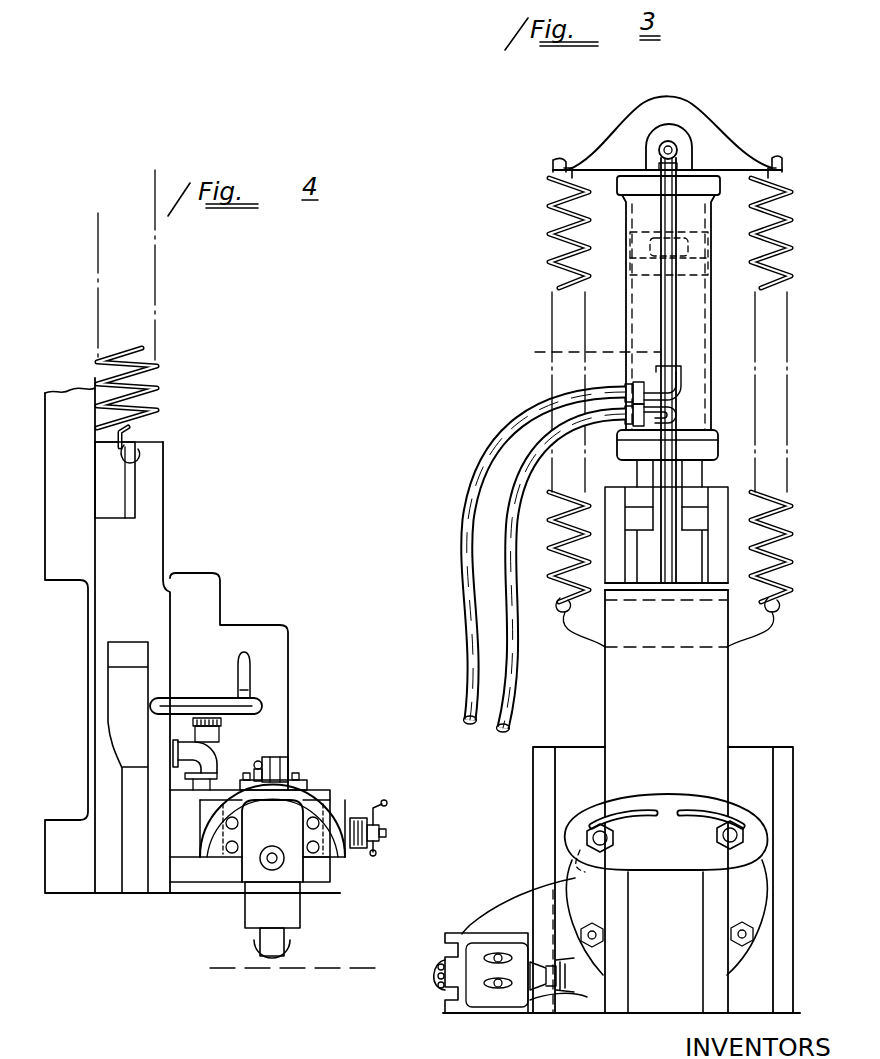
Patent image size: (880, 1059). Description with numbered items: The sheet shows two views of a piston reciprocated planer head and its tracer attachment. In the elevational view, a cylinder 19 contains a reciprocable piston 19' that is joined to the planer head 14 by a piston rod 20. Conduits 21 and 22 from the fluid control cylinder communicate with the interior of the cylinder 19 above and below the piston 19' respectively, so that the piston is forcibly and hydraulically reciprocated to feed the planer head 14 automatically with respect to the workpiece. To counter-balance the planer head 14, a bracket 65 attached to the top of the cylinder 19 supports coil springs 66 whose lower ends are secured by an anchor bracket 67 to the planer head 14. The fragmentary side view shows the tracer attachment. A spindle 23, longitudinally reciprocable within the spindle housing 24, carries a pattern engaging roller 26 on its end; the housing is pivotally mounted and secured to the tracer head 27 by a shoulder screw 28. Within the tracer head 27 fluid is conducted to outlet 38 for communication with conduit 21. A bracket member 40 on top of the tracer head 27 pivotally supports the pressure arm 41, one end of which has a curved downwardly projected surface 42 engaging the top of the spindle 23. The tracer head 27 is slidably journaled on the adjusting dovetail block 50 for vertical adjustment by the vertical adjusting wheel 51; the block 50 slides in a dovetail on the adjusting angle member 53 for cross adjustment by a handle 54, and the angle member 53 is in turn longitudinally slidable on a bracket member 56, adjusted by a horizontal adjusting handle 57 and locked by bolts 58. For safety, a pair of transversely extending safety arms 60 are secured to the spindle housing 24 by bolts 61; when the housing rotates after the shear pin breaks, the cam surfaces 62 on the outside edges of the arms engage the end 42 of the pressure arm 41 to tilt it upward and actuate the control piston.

In FIG. 3, the planer head 14 is at (716, 702).
In FIG. 4, the planer head 14 is at (205, 607).
In FIG. 3, the cylinder 19 is at (607, 303).
In FIG. 3, the piston 19' is at (693, 251).
In FIG. 3, the piston rod 20 is at (577, 349).
In FIG. 3, the conduit 21 is at (676, 150).
In FIG. 3, the conduit 22 is at (510, 522).
In FIG. 4, the spindle 23 is at (286, 944).
In FIG. 4, the spindle housing 24 is at (250, 927).
In FIG. 4, the pattern engaging roller 26 is at (280, 968).
In FIG. 4, the tracer head 27 is at (290, 796).
In FIG. 4, the shoulder screw 28 is at (272, 852).
In FIG. 4, the outlet 38 is at (205, 760).
In FIG. 4, the bracket member 40 is at (284, 770).
In FIG. 4, the pressure arm 41 is at (275, 765).
In FIG. 4, the curved downwardly projected surface 42 is at (215, 765).
In FIG. 4, the adjusting dovetail block 50 is at (98, 882).
In FIG. 4, the vertical adjusting wheel 51 is at (252, 665).
In FIG. 3, the adjusting angle member 53 is at (460, 1013).
In FIG. 3, the handle 54 is at (432, 974).
In FIG. 4, the handle 54 is at (390, 818).
In FIG. 3, the bracket member 56 is at (505, 900).
In FIG. 4, the bracket member 56 is at (125, 705).
In FIG. 3, the horizontal adjusting handle 57 is at (576, 982).
In FIG. 3, the bolts 58 is at (498, 988).
In FIG. 4, the safety arms 60 is at (338, 860).
In FIG. 4, the bolts 61 is at (228, 832).
In FIG. 4, the cam surfaces 62 is at (170, 885).
In FIG. 3, the bracket 65 is at (620, 138).
In FIG. 3, the coil springs 66 is at (552, 252).
In FIG. 4, the coil springs 66 is at (160, 387).
In FIG. 3, the anchor bracket 67 is at (588, 640).
In FIG. 4, the anchor bracket 67 is at (135, 492).